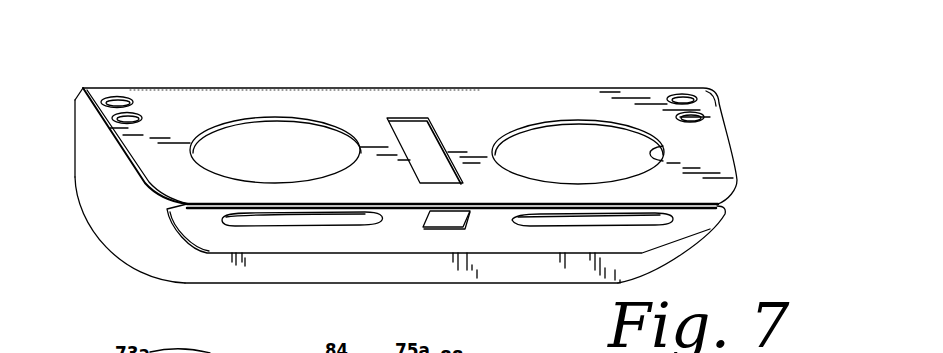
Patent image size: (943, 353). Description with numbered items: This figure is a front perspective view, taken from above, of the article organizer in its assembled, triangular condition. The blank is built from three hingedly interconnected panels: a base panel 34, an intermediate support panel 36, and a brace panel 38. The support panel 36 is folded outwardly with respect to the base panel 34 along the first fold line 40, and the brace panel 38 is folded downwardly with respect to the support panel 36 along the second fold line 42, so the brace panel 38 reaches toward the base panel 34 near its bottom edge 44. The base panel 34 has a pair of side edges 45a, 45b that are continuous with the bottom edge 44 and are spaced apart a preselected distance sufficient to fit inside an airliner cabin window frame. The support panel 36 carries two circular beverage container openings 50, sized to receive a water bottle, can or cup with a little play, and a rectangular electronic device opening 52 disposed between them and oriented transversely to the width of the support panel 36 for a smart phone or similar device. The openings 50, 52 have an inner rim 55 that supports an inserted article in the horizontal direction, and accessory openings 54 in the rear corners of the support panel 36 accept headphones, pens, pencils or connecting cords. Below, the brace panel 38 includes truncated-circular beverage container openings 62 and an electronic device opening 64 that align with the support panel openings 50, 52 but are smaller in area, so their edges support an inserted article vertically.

The base panel 34 is at (177, 267).
The intermediate support panel 36 is at (178, 169).
The brace panel 38 is at (242, 249).
The first fold line 40 is at (83, 88).
The second fold line 42 is at (180, 208).
The base panel bottom edge 44 is at (513, 285).
The side edge 45a is at (117, 157).
The side edge 45b is at (697, 247).
The beverage container openings 50 is at (270, 140).
The electronic device opening 52 is at (413, 137).
The accessory openings 54 is at (690, 117).
The inner rim 55 is at (665, 160).
The beverage container openings 62 is at (310, 213).
The electronic device opening 64 is at (437, 217).